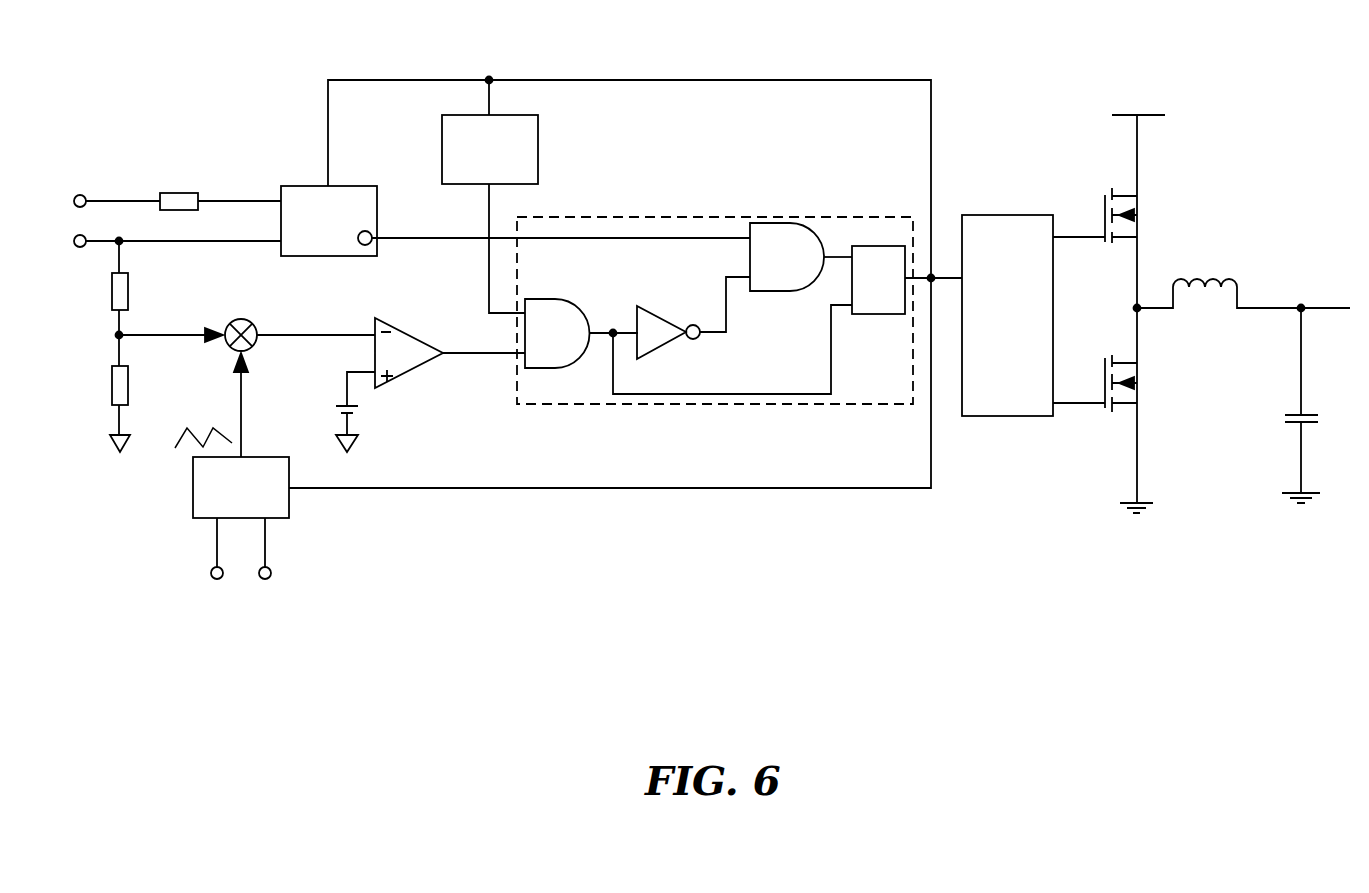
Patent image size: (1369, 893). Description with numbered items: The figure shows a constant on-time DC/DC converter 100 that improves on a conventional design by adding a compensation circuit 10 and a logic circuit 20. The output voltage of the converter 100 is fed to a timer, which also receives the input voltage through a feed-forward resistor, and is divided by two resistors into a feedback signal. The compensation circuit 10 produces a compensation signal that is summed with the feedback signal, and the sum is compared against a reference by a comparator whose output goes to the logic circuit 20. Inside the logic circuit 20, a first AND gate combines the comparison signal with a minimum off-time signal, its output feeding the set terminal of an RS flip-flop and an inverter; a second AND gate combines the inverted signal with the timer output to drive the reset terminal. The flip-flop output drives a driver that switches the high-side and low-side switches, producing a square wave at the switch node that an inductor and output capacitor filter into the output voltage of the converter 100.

The constant on-time DC/DC converter 100 is at (130, 107).
The compensation circuit 10 is at (292, 512).
The logic circuit 20 is at (799, 208).